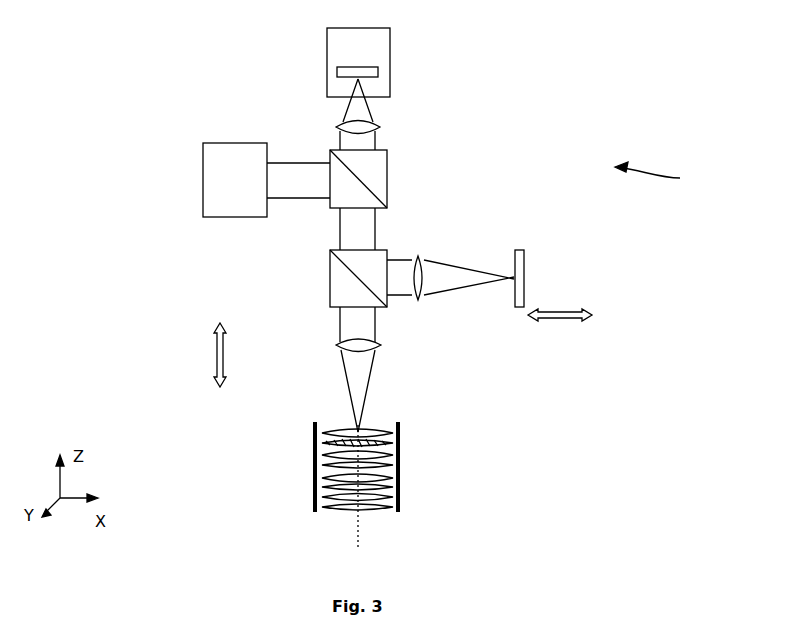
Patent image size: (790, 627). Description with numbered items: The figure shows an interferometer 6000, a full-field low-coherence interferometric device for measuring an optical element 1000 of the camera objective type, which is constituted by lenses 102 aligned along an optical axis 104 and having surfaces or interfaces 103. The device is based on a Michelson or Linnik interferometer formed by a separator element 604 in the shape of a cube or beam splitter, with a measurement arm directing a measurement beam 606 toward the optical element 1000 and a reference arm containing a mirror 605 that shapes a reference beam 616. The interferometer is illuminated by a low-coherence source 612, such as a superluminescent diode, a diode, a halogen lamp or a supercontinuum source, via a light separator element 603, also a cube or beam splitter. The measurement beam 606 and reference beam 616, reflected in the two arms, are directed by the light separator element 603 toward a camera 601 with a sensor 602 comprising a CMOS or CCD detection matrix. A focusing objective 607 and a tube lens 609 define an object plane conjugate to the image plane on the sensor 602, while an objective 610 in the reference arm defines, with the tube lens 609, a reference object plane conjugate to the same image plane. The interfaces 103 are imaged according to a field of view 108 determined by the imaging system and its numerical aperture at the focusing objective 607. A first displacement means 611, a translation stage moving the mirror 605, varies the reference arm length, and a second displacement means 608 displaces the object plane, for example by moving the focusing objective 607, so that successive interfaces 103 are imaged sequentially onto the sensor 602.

The camera 601 is at (390, 82).
The sensor 602 is at (378, 72).
The light separator element 603 is at (387, 178).
The separator element 604 is at (330, 280).
The mirror 605 is at (525, 278).
The measurement beam 606 is at (375, 373).
The focusing objective 607 is at (337, 344).
The second displacement means 608 is at (215, 356).
The tube lens 609 is at (335, 126).
The objective 610 is at (420, 300).
The first displacement means 611 is at (560, 323).
The low-coherence source 612 is at (203, 180).
The reference beam 616 is at (462, 268).
The interferometer 6000 is at (674, 175).
The optical element 1000 is at (307, 442).
The field of view 108 is at (400, 443).
The interfaces 103 is at (314, 490).
The lenses 102 is at (400, 503).
The optical axis 104 is at (360, 535).